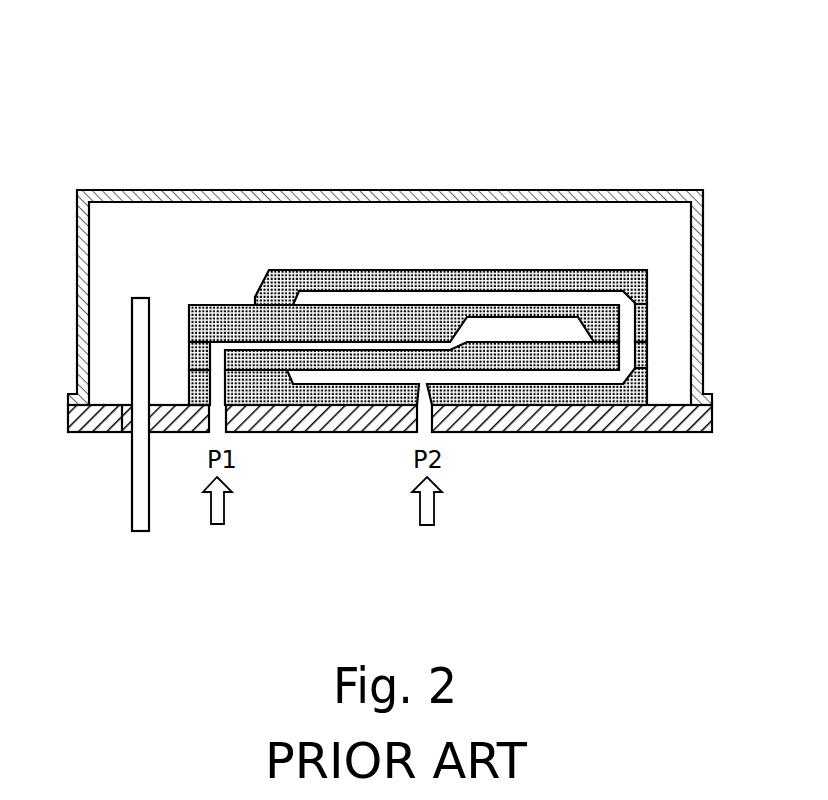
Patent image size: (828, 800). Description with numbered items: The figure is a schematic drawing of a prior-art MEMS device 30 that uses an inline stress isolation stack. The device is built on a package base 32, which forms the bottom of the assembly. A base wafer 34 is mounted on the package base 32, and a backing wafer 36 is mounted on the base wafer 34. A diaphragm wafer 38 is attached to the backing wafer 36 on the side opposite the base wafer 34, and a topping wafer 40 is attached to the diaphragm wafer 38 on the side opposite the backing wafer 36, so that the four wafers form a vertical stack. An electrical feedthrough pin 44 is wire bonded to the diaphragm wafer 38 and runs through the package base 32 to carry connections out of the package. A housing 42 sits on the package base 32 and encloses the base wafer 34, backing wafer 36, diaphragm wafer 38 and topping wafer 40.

The MEMS device 30 is at (106, 109).
The package base 32 is at (559, 420).
The base wafer 34 is at (625, 398).
The backing wafer 36 is at (607, 353).
The diaphragm wafer 38 is at (603, 325).
The topping wafer 40 is at (628, 280).
The housing 42 is at (265, 190).
The electrical feedthrough pin 44 is at (138, 469).